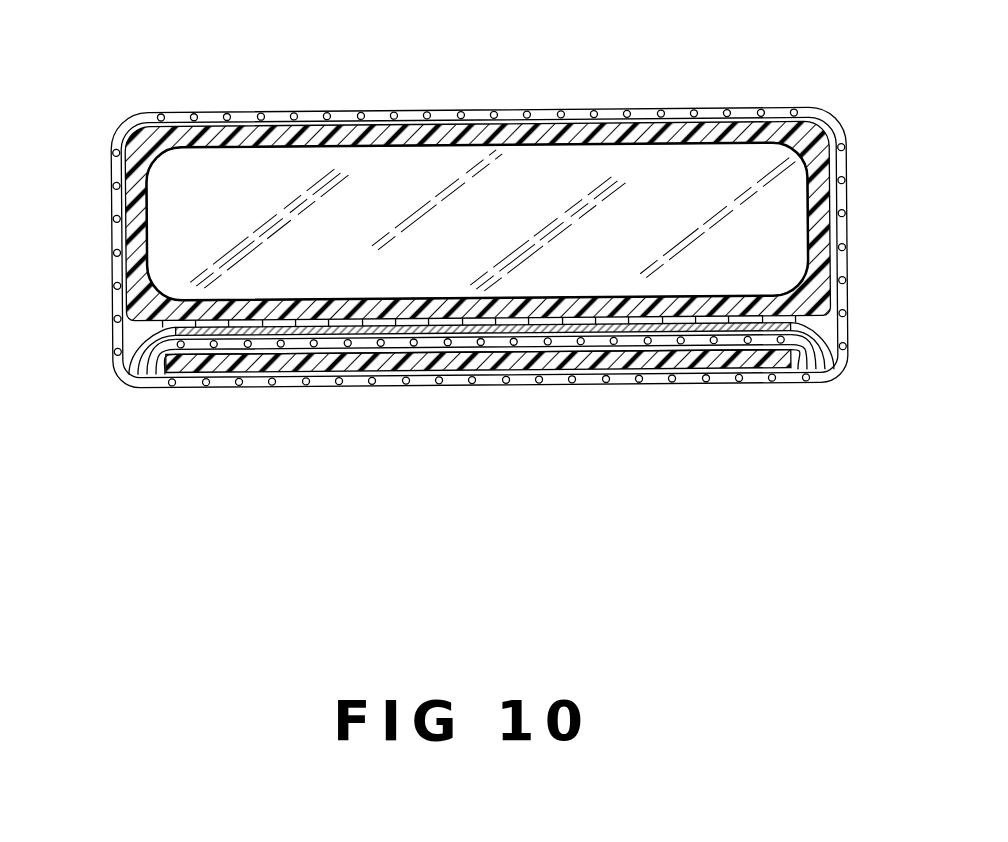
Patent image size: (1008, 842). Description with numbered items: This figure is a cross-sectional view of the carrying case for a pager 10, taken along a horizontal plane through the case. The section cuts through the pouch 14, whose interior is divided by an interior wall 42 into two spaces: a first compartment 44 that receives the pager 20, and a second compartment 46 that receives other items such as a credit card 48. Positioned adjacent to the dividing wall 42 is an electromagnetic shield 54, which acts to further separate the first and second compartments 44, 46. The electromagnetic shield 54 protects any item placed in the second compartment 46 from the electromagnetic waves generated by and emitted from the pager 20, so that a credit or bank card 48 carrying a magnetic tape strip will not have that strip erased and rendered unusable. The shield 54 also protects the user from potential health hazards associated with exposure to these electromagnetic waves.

The carrying case for a pager 10 is at (111, 111).
The pouch 14 is at (158, 113).
The first compartment 44 is at (492, 101).
The pager 20 is at (555, 188).
The interior wall 42 is at (795, 327).
The electromagnetic shield 54 is at (822, 357).
The credit card 48 is at (717, 362).
The second compartment 46 is at (137, 391).